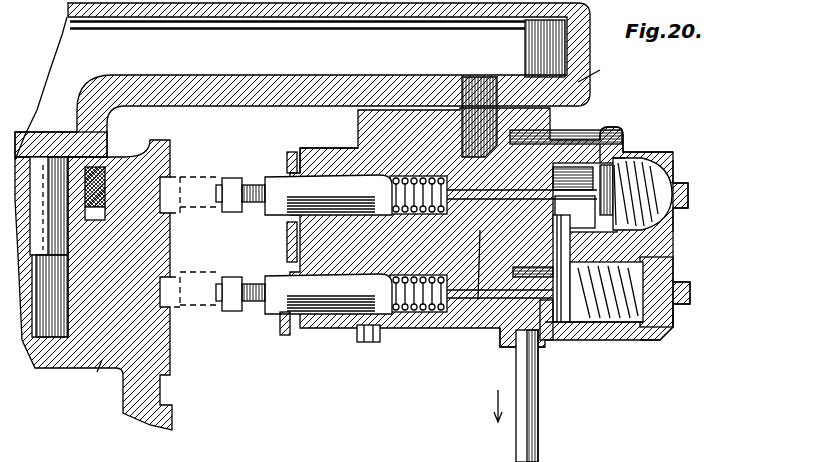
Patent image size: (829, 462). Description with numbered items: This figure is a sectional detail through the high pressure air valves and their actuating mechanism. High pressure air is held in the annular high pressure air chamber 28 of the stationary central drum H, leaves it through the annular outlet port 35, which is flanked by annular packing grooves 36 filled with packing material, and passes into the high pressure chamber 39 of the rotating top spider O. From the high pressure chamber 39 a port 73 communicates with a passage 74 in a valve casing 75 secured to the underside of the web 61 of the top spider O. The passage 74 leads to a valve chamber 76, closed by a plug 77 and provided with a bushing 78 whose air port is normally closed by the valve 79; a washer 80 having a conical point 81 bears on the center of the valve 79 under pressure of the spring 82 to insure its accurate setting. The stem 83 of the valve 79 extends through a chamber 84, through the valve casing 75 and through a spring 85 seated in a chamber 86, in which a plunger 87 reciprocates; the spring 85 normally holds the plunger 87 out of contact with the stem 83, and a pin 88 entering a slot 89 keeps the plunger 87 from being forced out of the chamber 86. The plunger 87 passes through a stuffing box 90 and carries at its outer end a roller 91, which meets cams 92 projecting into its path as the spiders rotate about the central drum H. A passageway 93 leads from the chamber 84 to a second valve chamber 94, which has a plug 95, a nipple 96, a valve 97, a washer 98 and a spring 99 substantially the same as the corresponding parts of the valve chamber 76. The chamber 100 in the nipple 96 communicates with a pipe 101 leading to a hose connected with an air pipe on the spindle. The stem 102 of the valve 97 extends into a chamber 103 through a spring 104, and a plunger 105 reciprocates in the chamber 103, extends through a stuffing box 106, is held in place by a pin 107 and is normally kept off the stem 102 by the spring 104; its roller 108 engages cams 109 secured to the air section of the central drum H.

The high pressure air chamber 28 is at (30, 345).
The annular outlet port 35 is at (57, 134).
The annular packing grooves 36 is at (114, 156).
The high pressure chamber 39 is at (317, 48).
The web 61 is at (226, 84).
The port 73 is at (489, 95).
The passage 74 is at (601, 152).
The valve casing 75 is at (478, 232).
The valve chamber 76 is at (650, 240).
The plug 77 is at (648, 170).
The bushing 78 is at (575, 207).
The valve 79 is at (678, 268).
The washer 80 is at (676, 220).
The conical point 81 is at (618, 153).
The spring 82 is at (685, 188).
The stem 83 is at (566, 127).
The chamber 84 is at (585, 168).
The spring 85 is at (400, 176).
The chamber 86 is at (430, 178).
The plunger 87 is at (284, 166).
The pin 88 is at (328, 193).
The slot 89 is at (287, 228).
The stuffing box 90 is at (311, 160).
The roller 91 is at (236, 180).
The cams 92 is at (188, 190).
The passageway 93 is at (560, 242).
The valve chamber 94 is at (640, 326).
The plug 95 is at (676, 325).
The nipple 96 is at (548, 342).
The valve 97 is at (555, 300).
The washer 98 is at (600, 325).
The spring 99 is at (690, 292).
The chamber 100 is at (545, 352).
The pipe 101 is at (540, 450).
The stem 102 is at (503, 348).
The chamber 103 is at (445, 302).
The spring 104 is at (420, 313).
The plunger 105 is at (282, 315).
The stuffing box 106 is at (286, 336).
The pin 107 is at (358, 334).
The roller 108 is at (226, 276).
The cams 109 is at (188, 296).
The central drum H is at (94, 377).
The top spider O is at (598, 67).